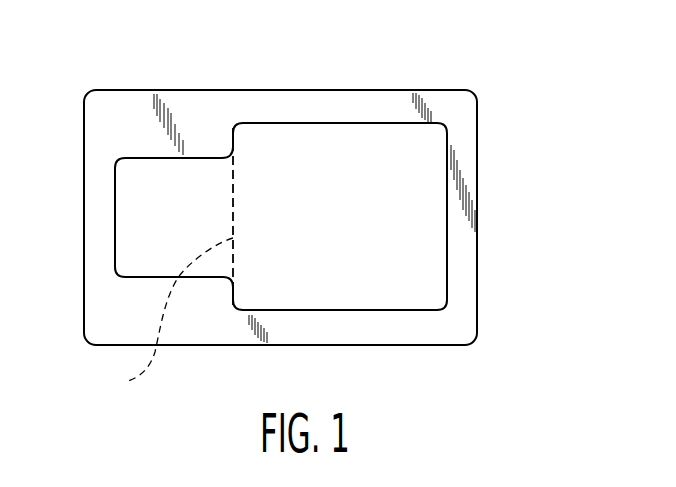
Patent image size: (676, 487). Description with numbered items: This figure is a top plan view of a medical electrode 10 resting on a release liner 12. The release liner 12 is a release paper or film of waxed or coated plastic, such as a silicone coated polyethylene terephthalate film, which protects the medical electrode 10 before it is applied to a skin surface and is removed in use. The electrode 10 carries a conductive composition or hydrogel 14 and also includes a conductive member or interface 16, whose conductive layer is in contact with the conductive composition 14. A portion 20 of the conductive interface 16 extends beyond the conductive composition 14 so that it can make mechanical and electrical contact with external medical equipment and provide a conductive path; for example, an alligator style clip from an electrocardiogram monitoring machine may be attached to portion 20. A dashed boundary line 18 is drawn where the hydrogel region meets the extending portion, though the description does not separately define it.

The medical electrode 10 is at (294, 205).
The release liner 12 is at (462, 113).
The conductive composition or hydrogel 14 is at (166, 319).
The conductive member or interface 16 is at (437, 253).
The boundary / step line 18 is at (248, 297).
The portion of the conductive interface 20 is at (133, 223).